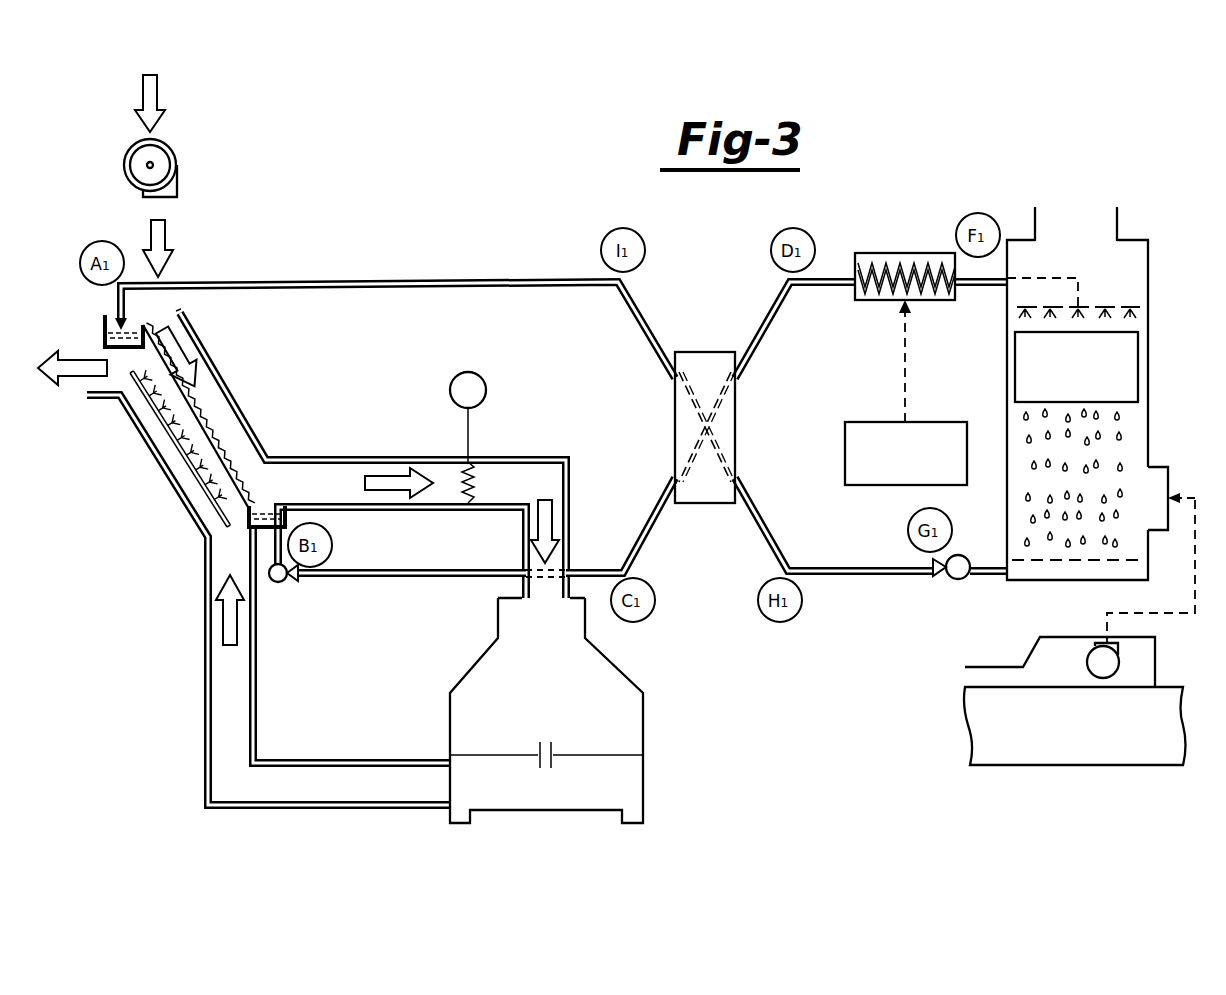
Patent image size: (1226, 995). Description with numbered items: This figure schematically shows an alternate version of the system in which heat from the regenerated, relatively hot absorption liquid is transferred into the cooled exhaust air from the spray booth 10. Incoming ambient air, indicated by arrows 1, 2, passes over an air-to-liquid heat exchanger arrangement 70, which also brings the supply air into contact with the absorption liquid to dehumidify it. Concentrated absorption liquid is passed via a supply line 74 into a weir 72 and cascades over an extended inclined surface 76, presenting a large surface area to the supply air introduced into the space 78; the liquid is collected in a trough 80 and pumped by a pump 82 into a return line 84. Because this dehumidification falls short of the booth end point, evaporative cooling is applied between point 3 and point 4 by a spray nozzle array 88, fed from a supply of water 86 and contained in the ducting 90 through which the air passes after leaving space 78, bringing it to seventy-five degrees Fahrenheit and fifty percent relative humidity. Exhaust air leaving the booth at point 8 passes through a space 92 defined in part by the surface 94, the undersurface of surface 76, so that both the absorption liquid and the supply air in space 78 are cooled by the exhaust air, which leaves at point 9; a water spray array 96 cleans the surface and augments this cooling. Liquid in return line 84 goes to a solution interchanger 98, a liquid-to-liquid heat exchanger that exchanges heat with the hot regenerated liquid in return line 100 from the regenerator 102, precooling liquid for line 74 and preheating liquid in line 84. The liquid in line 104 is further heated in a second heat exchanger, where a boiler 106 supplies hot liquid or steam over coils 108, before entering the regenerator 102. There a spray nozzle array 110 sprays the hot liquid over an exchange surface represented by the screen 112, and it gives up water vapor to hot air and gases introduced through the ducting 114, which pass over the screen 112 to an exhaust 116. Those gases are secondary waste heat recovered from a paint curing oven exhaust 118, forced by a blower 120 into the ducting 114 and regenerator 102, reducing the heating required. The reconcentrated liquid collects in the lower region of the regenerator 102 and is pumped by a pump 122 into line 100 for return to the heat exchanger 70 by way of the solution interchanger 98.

The ambient air stream arrow 1 is at (150, 103).
The incoming ambient air arrow 2 is at (158, 248).
The air state point 3 is at (399, 483).
The air state point 4 is at (545, 531).
The air state point 8 is at (230, 610).
The exhaust air state point 9 is at (72, 368).
The spray booth 10 is at (613, 667).
The air-to-liquid heat exchanger arrangement 70 is at (232, 346).
The water tray 72 is at (103, 331).
The supply line 74 is at (375, 282).
The extended inclined surface 76 is at (207, 438).
The space 78 is at (211, 394).
The trough 80 is at (263, 506).
The pump 82 is at (273, 583).
The return line 84 is at (355, 578).
The supply of water 86 is at (485, 374).
The spray nozzle array 88 is at (476, 472).
The ducting 90 is at (420, 422).
The space 92 is at (213, 534).
The surface 94 is at (142, 386).
The water spray array 96 is at (170, 445).
The solution interchanger 98 is at (696, 352).
The return line 100 is at (815, 570).
The regenerator 102 is at (997, 385).
The line 104 is at (823, 280).
The boiler 106 is at (845, 470).
The coils 108 is at (884, 253).
The spray nozzle array 110 is at (1105, 307).
The screen 112 is at (1123, 372).
The ducting 114 is at (1150, 474).
The exhaust 116 is at (1087, 218).
The paint curing oven exhaust 118 is at (1162, 687).
The blower 120 is at (1118, 657).
The pump 122 is at (958, 580).